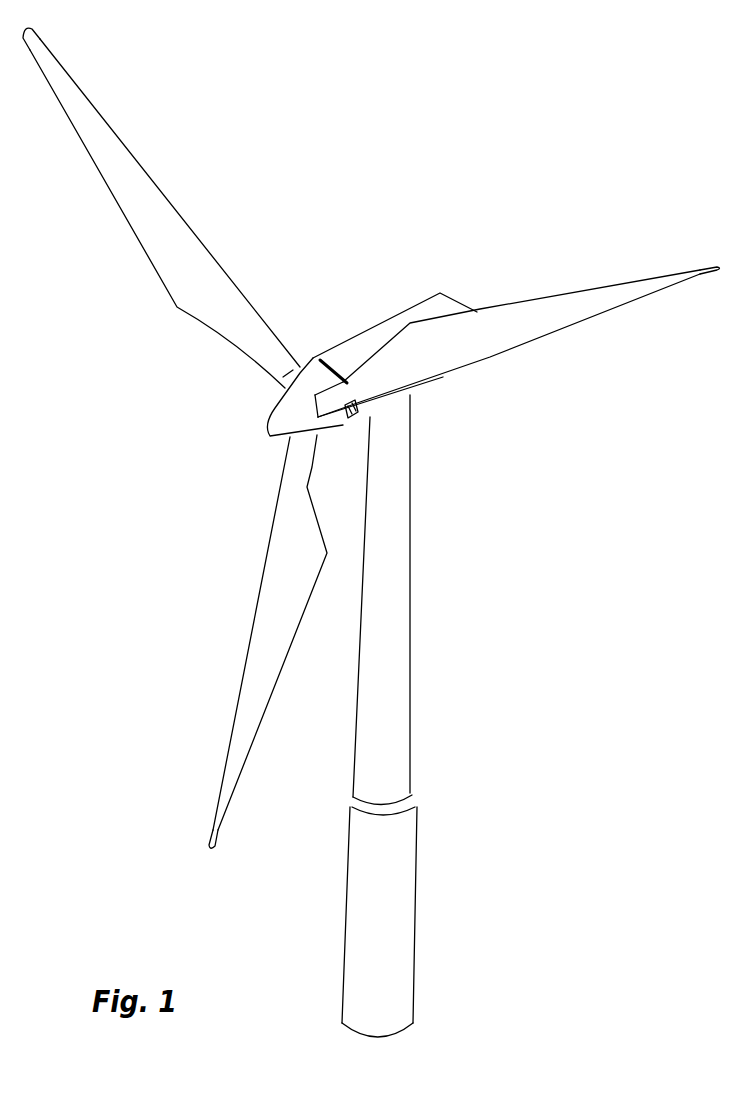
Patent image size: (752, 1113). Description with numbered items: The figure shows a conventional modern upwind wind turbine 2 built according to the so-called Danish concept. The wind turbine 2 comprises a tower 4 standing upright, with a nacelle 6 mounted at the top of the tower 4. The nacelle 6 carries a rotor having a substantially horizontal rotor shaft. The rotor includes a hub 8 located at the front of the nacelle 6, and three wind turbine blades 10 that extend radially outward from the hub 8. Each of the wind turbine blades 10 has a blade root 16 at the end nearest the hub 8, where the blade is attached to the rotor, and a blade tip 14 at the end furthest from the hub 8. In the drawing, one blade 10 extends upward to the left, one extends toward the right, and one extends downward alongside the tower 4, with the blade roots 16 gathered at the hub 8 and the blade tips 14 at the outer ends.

The wind turbine 2 is at (371, 532).
The tower 4 is at (402, 597).
The nacelle 6 is at (345, 341).
The hub 8 is at (268, 408).
The wind turbine blade 10 is at (172, 304).
The blade tip 14 is at (63, 74).
The blade root 16 is at (288, 378).